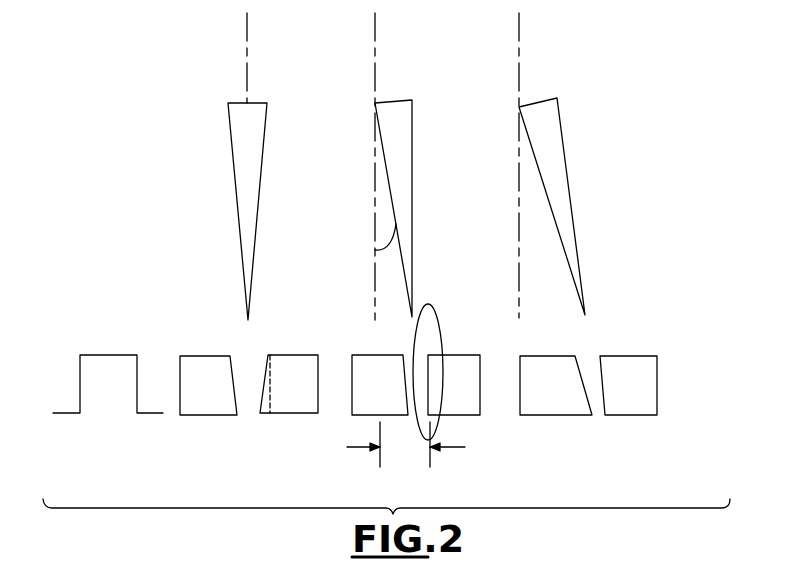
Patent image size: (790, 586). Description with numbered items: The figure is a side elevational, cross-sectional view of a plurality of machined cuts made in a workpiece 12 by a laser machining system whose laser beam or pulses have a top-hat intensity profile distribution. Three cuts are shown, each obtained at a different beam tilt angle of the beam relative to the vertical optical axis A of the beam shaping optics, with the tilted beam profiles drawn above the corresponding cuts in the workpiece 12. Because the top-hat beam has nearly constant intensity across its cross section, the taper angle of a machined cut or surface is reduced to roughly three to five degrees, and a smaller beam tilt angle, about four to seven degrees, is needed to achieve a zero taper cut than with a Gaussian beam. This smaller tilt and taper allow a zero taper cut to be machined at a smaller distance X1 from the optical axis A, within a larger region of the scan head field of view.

The workpiece 12 is at (107, 347).
The vertical optical axis A is at (247, 37).
The distance from the optical axis X1 is at (406, 444).